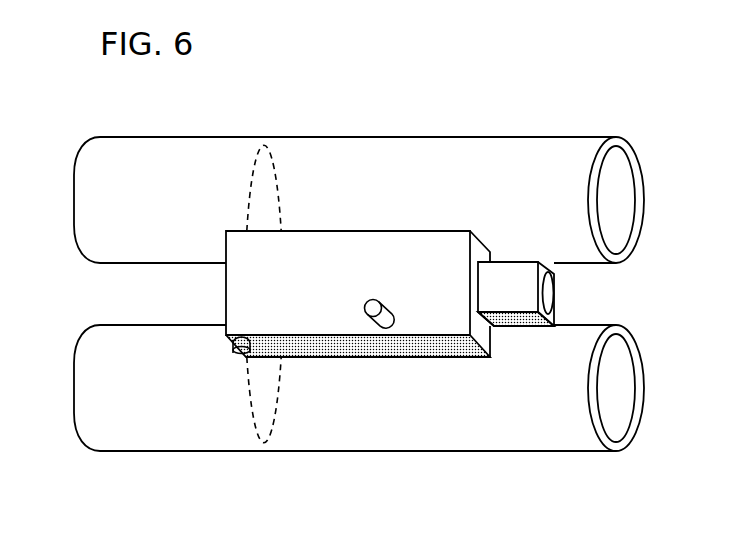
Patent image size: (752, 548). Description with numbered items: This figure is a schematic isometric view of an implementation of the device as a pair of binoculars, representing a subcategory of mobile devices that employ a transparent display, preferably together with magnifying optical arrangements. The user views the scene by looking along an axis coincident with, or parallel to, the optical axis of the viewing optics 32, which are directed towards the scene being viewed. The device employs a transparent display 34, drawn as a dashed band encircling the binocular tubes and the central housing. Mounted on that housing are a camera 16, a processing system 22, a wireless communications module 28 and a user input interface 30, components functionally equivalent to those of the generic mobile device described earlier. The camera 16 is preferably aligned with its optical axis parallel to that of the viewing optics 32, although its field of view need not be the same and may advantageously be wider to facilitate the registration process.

The camera 16 is at (557, 295).
The processing system 22 is at (348, 231).
The wireless communications module 28 is at (395, 327).
The user input interface 30 is at (233, 348).
The viewing optics 32 is at (358, 137).
The transparent display 34 is at (277, 167).